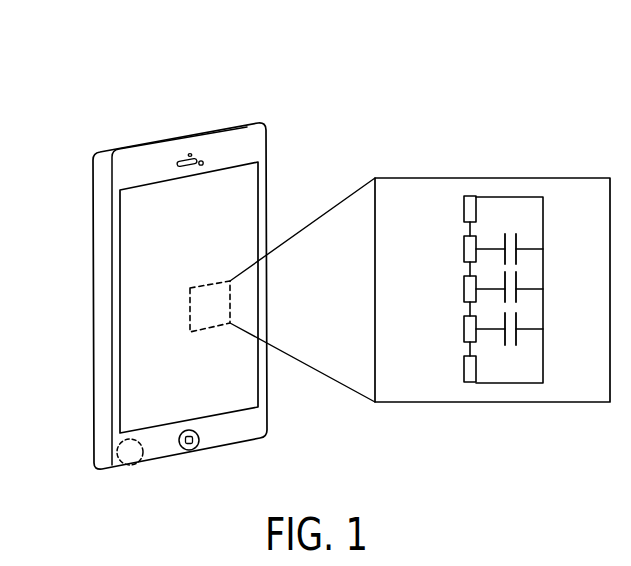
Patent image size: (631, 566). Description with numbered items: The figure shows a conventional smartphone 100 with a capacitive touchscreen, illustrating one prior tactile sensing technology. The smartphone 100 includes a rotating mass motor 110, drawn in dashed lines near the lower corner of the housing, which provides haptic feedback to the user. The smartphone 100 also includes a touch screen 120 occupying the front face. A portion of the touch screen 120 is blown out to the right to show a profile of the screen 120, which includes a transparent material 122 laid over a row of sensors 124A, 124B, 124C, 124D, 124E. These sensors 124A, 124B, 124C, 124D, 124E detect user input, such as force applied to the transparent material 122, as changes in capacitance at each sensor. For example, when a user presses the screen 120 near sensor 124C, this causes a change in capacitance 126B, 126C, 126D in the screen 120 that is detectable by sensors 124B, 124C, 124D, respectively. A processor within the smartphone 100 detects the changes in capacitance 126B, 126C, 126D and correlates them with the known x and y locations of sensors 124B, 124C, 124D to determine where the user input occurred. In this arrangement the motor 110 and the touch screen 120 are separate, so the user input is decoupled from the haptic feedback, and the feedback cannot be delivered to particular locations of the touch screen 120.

The smartphone 100 is at (92, 92).
The rotating mass motor 110 is at (118, 456).
The touch screen 120 is at (243, 162).
The transparent material 122 is at (496, 196).
The sensor 124A is at (464, 209).
The sensor 124B is at (464, 249).
The sensor 124C is at (464, 289).
The sensor 124D is at (464, 329).
The sensor 124E is at (464, 369).
The change in capacitance 126B is at (517, 242).
The change in capacitance 126C is at (517, 284).
The change in capacitance 126D is at (517, 322).